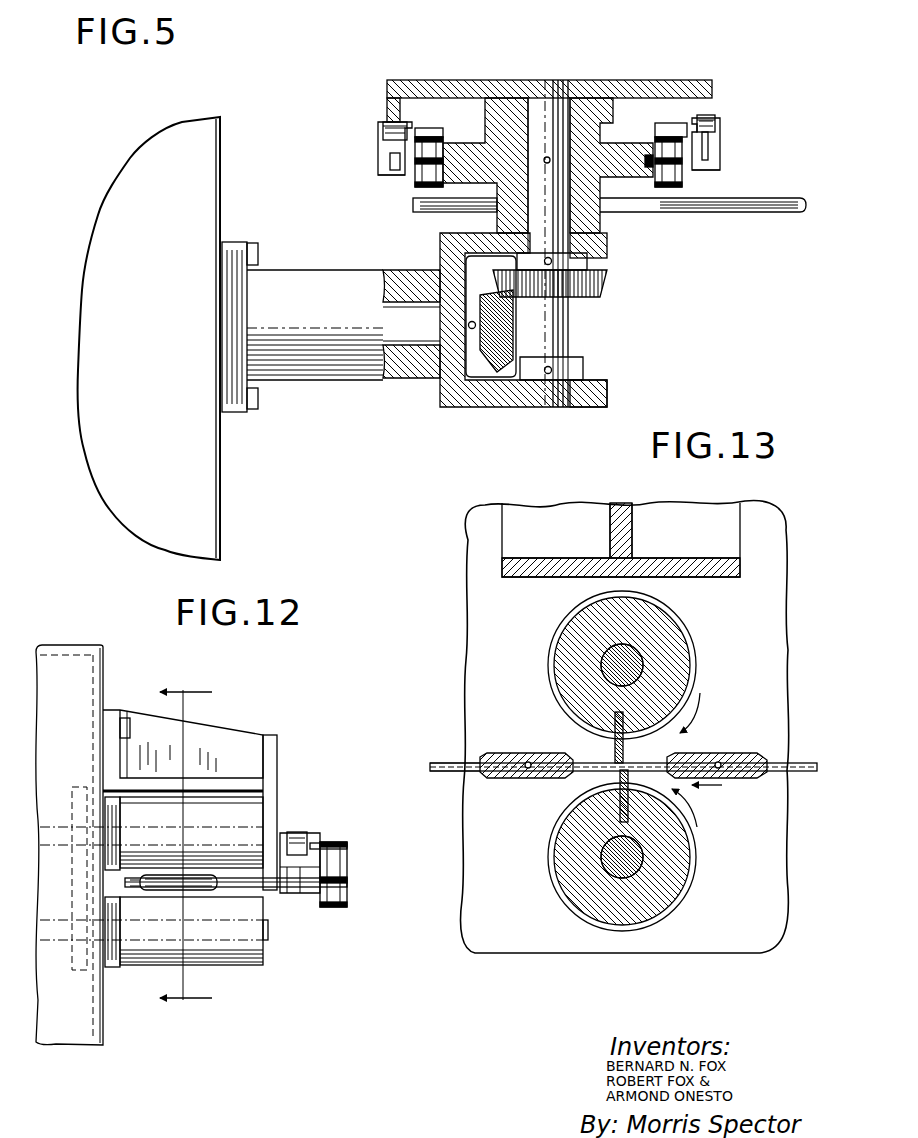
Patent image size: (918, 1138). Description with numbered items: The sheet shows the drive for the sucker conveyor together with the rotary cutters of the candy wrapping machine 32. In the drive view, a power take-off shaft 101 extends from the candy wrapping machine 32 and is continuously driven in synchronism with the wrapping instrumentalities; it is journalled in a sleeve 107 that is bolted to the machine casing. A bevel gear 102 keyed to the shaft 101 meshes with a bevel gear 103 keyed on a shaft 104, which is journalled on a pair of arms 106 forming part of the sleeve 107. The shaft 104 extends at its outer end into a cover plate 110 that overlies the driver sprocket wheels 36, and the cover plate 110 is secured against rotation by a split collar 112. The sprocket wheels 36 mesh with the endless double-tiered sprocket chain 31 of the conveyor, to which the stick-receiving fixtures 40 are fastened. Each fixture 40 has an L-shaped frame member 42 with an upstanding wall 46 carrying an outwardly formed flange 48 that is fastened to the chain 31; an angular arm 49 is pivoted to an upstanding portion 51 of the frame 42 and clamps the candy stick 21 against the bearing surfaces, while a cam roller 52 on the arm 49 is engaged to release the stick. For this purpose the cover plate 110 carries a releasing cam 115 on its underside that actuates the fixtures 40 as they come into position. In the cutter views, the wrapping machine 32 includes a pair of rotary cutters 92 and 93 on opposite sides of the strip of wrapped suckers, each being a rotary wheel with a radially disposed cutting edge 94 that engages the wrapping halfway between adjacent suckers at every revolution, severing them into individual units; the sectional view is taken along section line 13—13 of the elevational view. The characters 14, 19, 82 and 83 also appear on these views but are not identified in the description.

In FIG. 12, the section line 13 is at (186, 849).
In FIG. 5, the cavity in hub 14 is at (611, 165).
In FIG. 12, the inner ring of link 19 is at (192, 895).
In FIG. 12, the candy stick 21 is at (272, 888).
In FIG. 13, the candy stick 21 is at (735, 753).
In FIG. 5, the double tiered sprocket chain 31 is at (418, 180).
In FIG. 12, the double tiered sprocket chain 31 is at (348, 893).
In FIG. 5, the candy wrapping machine 32 is at (186, 455).
In FIG. 12, the candy wrapping machine 32 is at (82, 1045).
In FIG. 13, the candy wrapping machine 32 is at (483, 627).
In FIG. 5, the driver sprocket wheels 36 is at (480, 138).
In FIG. 5, the stick-receiving fixture 40 is at (376, 145).
In FIG. 12, the stick-receiving fixture 40 is at (322, 832).
In FIG. 5, the L-shaped frame member 42 is at (380, 178).
In FIG. 5, the upstanding wall 46 is at (680, 162).
In FIG. 5, the outwardly formed flange 48 is at (440, 120).
In FIG. 12, the outwardly formed flange 48 is at (348, 848).
In FIG. 5, the angular arm 49 is at (390, 165).
In FIG. 5, the upstanding portion 51 is at (382, 133).
In FIG. 5, the cam roller 52 is at (384, 116).
In FIG. 12, the cam roller 52 is at (300, 832).
In FIG. 13, the rod end 82 is at (452, 763).
In FIG. 13, the rod end 83 is at (450, 771).
In FIG. 12, the rotary cutter 92 is at (250, 818).
In FIG. 13, the rotary cutter 92 is at (677, 653).
In FIG. 12, the rotary cutter 93 is at (255, 960).
In FIG. 13, the rotary cutter 93 is at (580, 893).
In FIG. 12, the cutting edge 94 is at (235, 877).
In FIG. 13, the cutting edge 94 is at (614, 736).
In FIG. 5, the power take-off shaft 101 is at (432, 346).
In FIG. 5, the bevel gear 102 is at (505, 370).
In FIG. 5, the bevel gear 103 is at (607, 284).
In FIG. 5, the shaft 104 is at (582, 325).
In FIG. 5, the arms 106 is at (610, 248).
In FIG. 5, the sleeve 107 is at (396, 272).
In FIG. 5, the cover plate 110 is at (500, 86).
In FIG. 5, the split collar 112 is at (510, 84).
In FIG. 5, the releasing cam 115 is at (387, 103).